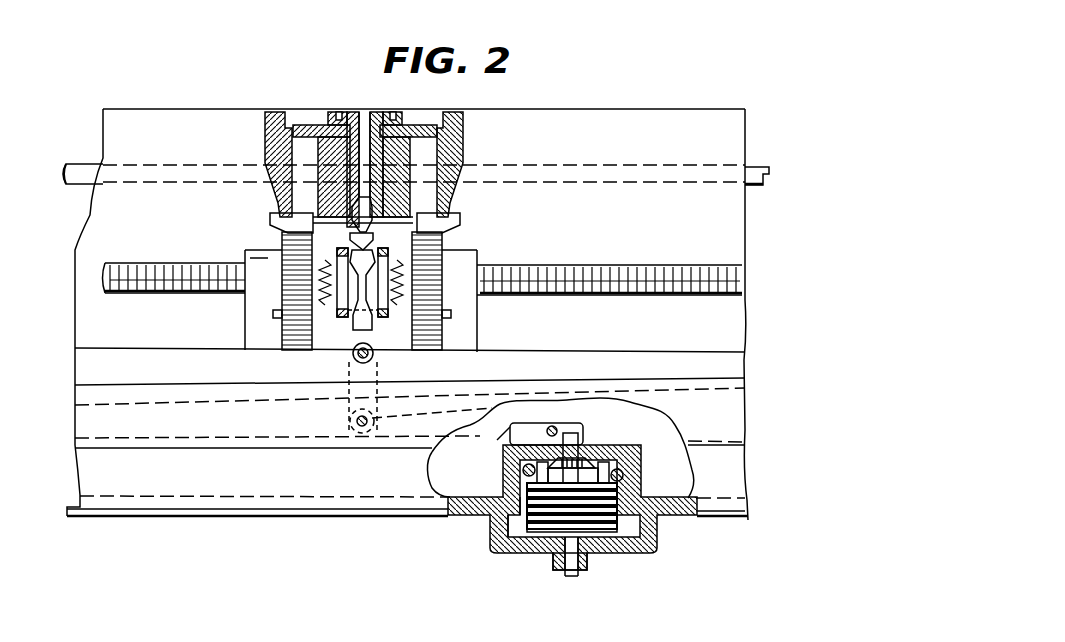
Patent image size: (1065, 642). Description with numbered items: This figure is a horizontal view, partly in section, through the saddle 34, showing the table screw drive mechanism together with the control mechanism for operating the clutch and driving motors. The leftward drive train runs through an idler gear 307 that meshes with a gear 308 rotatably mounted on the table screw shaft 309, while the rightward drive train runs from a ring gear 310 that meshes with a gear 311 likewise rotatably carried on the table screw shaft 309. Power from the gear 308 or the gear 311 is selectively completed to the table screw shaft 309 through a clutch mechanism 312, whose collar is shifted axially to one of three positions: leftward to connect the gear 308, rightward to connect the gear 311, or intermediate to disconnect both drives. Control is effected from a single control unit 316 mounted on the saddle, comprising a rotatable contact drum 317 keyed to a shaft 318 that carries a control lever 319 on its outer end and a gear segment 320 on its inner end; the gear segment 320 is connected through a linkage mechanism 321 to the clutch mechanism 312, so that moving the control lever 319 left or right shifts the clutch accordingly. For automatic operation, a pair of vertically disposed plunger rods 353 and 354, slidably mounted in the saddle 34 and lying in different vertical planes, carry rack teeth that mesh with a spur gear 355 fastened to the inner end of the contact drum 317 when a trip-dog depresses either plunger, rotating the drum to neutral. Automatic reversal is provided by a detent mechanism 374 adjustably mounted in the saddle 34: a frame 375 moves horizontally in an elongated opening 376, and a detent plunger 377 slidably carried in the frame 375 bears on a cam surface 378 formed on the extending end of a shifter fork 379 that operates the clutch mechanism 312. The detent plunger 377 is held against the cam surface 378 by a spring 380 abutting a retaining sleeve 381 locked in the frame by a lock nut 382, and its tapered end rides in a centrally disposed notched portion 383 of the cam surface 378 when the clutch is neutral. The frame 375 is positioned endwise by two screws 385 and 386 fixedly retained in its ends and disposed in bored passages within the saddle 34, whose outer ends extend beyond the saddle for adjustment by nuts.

The saddle 34 is at (622, 128).
The idler gear 307 is at (297, 350).
The gear 308 is at (290, 226).
The table screw shaft 309 is at (632, 264).
The ring gear 310 is at (425, 352).
The gear 311 is at (458, 228).
The clutch mechanism 312 is at (376, 322).
The control unit 316 is at (667, 537).
The contact drum 317 is at (513, 554).
The shaft 318 is at (569, 576).
The control lever 319 is at (588, 565).
The gear segment 320 is at (580, 460).
The linkage mechanism 321 is at (512, 423).
The plunger rod 353 is at (522, 470).
The plunger rod 354 is at (624, 477).
The spur gear 355 is at (535, 482).
The detent mechanism 374 is at (380, 110).
The frame 375 is at (402, 120).
The elongated opening 376 is at (455, 140).
The detent plunger 377 is at (417, 205).
The cam surface 378 is at (343, 254).
The shifter fork 379 is at (354, 323).
The spring 380 is at (324, 190).
The retaining sleeve 381 is at (353, 111).
The lock nut 382 is at (337, 111).
The notched portion 383 is at (382, 254).
The screw 385 is at (762, 167).
The screw 386 is at (85, 163).